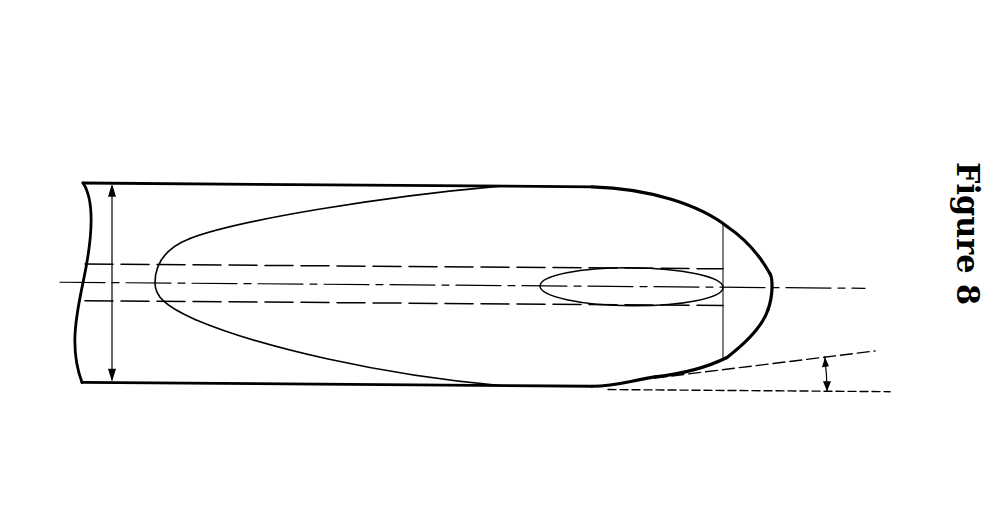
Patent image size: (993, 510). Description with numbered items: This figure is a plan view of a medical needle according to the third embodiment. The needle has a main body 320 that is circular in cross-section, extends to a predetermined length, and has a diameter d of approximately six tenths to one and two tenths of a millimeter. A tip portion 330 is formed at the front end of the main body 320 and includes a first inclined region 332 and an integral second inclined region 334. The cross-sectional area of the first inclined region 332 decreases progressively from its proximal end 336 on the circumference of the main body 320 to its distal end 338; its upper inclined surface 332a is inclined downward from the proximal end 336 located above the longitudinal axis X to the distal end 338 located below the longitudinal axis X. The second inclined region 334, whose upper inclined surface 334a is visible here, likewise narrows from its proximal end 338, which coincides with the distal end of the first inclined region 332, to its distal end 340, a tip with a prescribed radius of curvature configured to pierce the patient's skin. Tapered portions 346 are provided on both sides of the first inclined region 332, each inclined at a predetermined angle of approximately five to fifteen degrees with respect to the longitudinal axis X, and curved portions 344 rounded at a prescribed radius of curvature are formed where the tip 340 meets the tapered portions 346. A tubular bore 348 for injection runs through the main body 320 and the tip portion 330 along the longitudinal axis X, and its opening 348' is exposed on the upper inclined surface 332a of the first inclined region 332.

The main body 320 is at (165, 206).
The tip portion 330 is at (587, 90).
The first inclined region 332 is at (600, 173).
The upper inclined surface 332a is at (450, 214).
The second inclined region 334 is at (771, 229).
The upper inclined surface 334a is at (738, 234).
The proximal end 336 is at (148, 286).
The distal end 338 is at (722, 342).
The distal end 340 is at (774, 281).
The curved portion 344 is at (723, 215).
The tapered portion 346 is at (655, 372).
The tubular bore 348 is at (404, 199).
The opening 348' is at (624, 353).
The diameter d is at (119, 283).
The longitudinal axis X is at (473, 287).